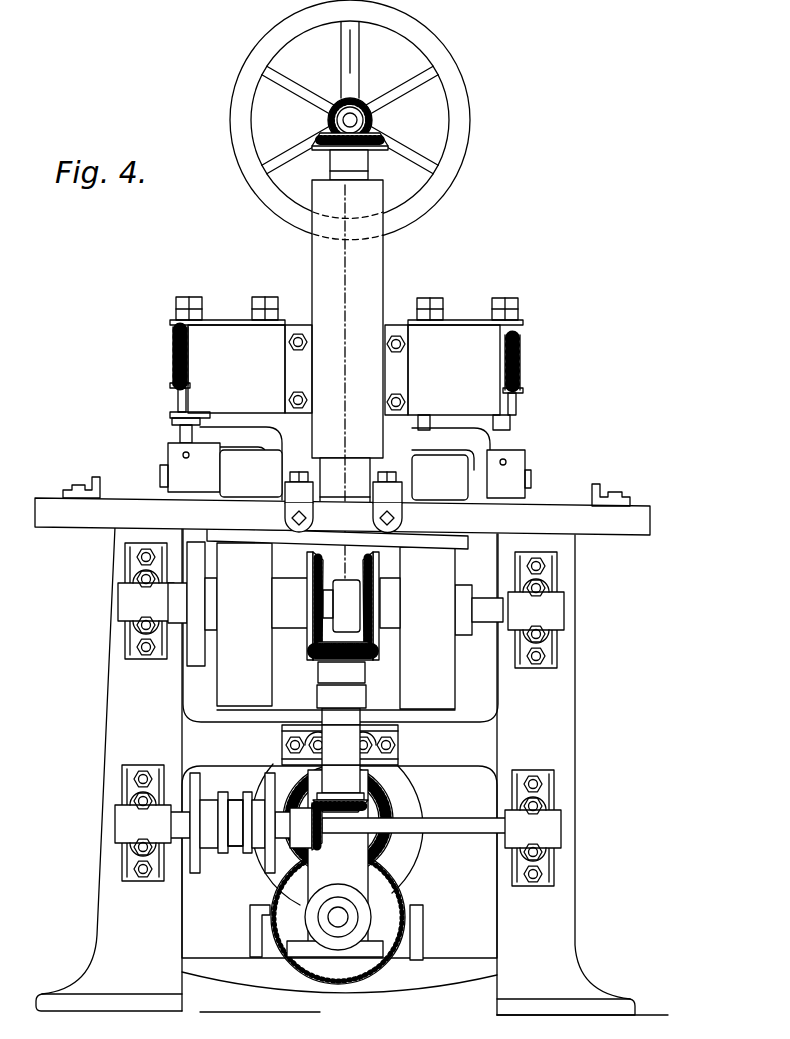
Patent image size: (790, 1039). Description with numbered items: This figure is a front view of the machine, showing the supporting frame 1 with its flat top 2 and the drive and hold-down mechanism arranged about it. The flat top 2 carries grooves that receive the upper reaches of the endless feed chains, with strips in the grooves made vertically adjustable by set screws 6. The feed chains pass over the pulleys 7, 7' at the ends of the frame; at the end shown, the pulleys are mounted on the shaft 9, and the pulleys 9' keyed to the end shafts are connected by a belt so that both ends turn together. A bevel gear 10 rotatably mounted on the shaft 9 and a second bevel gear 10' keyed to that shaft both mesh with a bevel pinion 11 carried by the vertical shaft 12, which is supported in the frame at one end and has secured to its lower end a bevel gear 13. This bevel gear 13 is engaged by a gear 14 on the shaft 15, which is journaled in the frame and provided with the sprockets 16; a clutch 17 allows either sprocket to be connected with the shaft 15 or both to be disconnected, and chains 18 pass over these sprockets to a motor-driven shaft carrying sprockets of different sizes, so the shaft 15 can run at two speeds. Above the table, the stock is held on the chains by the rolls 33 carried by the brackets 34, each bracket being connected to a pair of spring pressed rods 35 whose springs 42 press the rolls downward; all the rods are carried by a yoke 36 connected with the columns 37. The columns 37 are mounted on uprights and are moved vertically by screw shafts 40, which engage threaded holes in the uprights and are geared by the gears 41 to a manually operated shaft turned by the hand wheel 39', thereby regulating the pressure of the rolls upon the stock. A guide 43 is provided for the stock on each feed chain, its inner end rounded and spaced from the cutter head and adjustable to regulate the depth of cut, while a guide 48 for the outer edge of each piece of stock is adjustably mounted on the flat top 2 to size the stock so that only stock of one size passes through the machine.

The supporting frame 1 is at (108, 870).
The flat top 2 is at (342, 523).
The set screws 6 is at (345, 342).
The pulleys 7 is at (428, 628).
The bearing block 7' is at (262, 624).
The shaft 9 is at (479, 626).
The pulleys 9' is at (192, 619).
The bevel gear 10 is at (381, 606).
The second bevel gear 10' is at (300, 606).
The bevel pinion 11 is at (365, 665).
The vertical shaft 12 is at (345, 688).
The bevel gear 13 is at (340, 760).
The gear 14 is at (320, 840).
The shaft 15 is at (492, 830).
The sprockets 16 is at (270, 780).
The clutch 17 is at (233, 848).
The chains 18 is at (270, 868).
The rolls 33 is at (344, 475).
The brackets 34 is at (190, 432).
The spring pressed rods 35 is at (265, 295).
The yoke 36 is at (346, 367).
The columns 37 is at (383, 275).
The hand wheel 39' is at (370, 120).
The screw shafts 40 is at (345, 150).
The gears 41 is at (360, 100).
The springs 42 is at (521, 366).
The guide 43 is at (299, 490).
The guide 48 is at (77, 490).